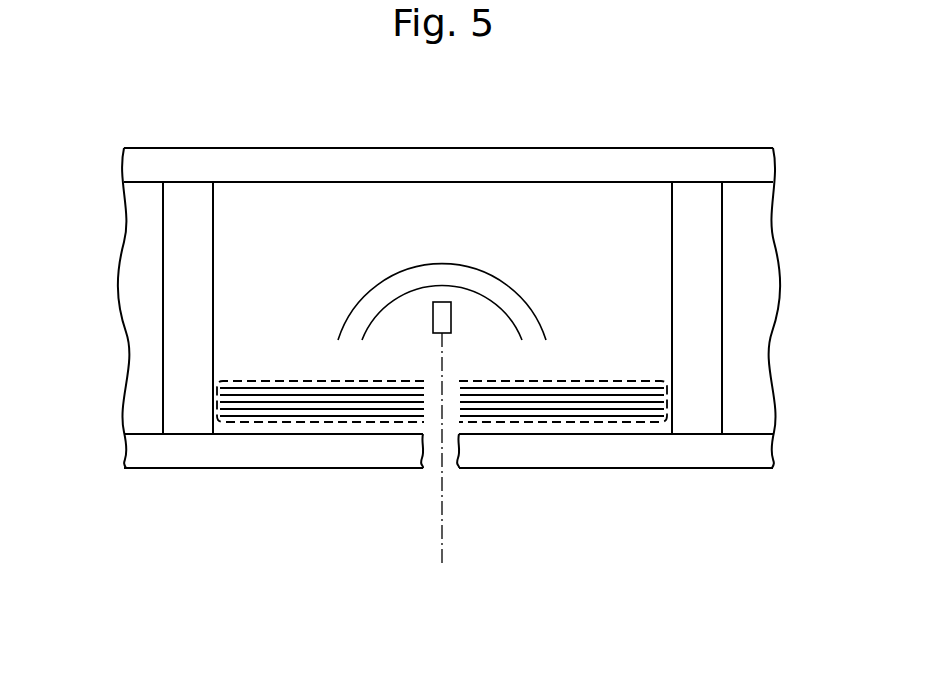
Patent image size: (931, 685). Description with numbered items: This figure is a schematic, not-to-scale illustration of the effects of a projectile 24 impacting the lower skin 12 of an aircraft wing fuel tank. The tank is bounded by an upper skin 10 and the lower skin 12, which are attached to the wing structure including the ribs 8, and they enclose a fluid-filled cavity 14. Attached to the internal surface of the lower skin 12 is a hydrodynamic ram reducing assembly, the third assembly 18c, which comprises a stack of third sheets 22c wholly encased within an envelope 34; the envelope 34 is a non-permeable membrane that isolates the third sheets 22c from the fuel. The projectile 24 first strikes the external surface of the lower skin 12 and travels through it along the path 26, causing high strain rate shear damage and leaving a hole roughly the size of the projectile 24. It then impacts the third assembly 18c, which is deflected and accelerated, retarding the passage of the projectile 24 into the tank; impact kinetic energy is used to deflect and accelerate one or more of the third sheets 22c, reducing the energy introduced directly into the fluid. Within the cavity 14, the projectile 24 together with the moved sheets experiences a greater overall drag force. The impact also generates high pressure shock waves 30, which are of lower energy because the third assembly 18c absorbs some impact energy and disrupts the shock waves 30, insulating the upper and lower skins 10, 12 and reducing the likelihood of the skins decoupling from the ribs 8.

The rib 8 is at (180, 303).
The upper skin 10 is at (562, 158).
The lower skin 12 is at (190, 453).
The cavity 14 is at (458, 231).
The third assembly 18c is at (255, 372).
The third sheets 22c is at (300, 393).
The projectile 24 is at (433, 311).
The path of the projectile 26 is at (443, 543).
The shock waves 30 is at (510, 287).
The envelope 34 is at (317, 380).